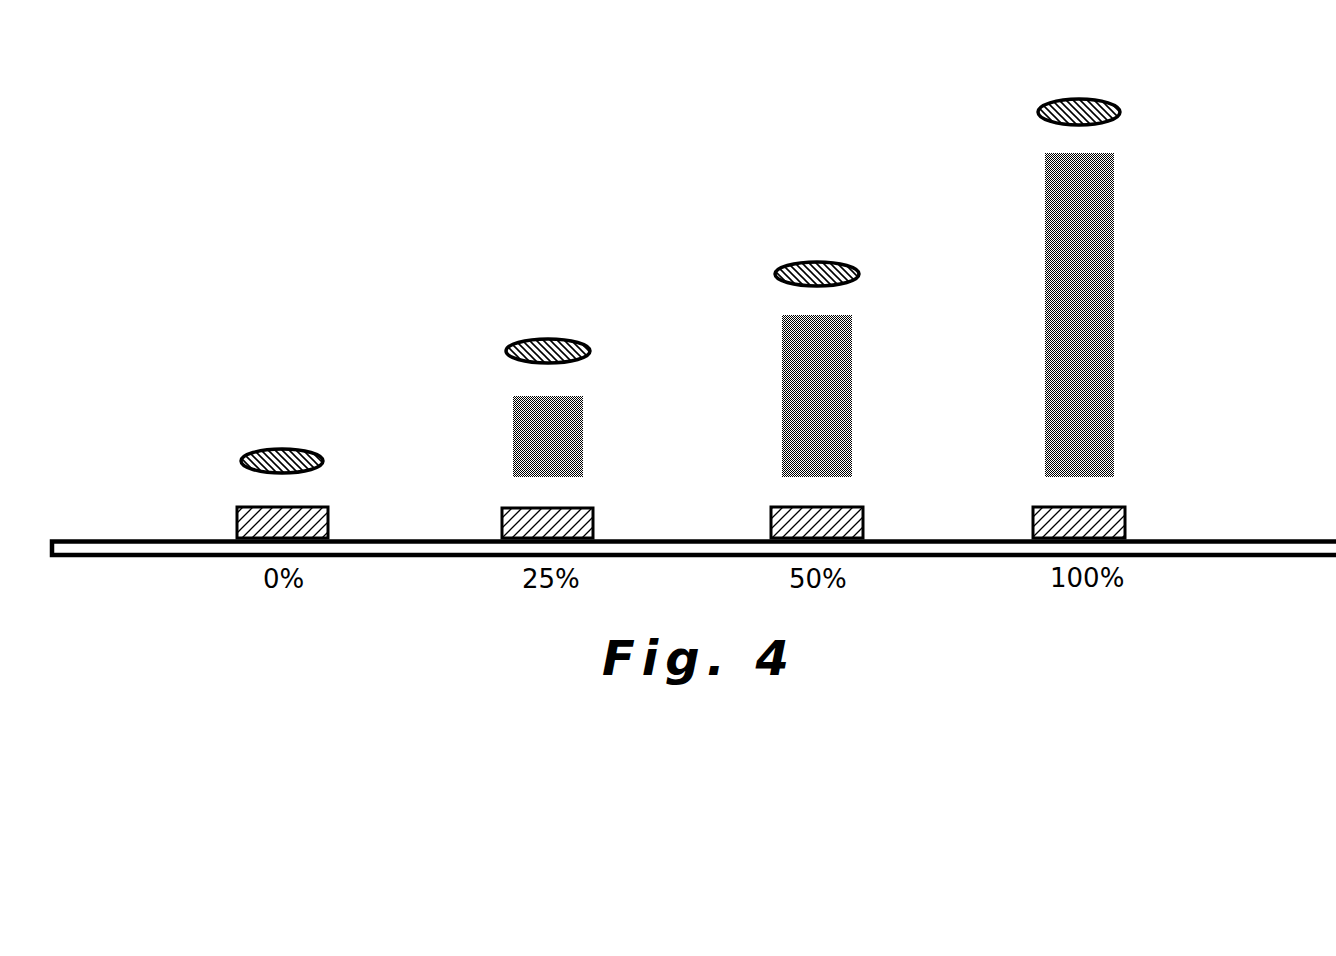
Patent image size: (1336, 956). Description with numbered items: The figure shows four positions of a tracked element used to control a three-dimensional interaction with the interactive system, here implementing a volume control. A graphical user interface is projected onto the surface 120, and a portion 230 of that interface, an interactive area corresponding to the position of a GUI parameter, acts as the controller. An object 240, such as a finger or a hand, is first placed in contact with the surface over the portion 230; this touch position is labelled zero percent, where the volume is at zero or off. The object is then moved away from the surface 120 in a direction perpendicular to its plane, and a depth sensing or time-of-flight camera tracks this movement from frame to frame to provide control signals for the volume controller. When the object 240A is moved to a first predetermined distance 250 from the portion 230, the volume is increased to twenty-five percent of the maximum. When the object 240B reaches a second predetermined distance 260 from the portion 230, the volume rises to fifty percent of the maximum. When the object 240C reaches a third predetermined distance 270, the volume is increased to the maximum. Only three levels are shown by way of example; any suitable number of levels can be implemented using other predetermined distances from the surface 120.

The surface 120 is at (1241, 548).
The portion of the GUI 230 is at (317, 515).
The object 240 is at (287, 450).
The object at first predetermined distance 240A is at (545, 352).
The object at second predetermined distance 240B is at (825, 273).
The object at third predetermined distance 240C is at (1085, 113).
The first predetermined distance 250 is at (580, 443).
The second predetermined distance 260 is at (849, 390).
The third predetermined distance 270 is at (1111, 295).